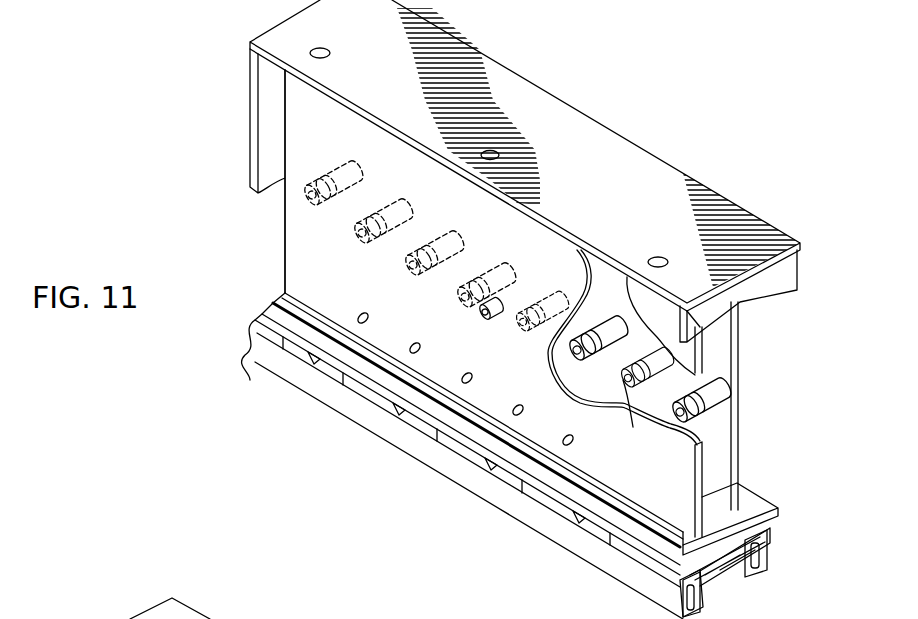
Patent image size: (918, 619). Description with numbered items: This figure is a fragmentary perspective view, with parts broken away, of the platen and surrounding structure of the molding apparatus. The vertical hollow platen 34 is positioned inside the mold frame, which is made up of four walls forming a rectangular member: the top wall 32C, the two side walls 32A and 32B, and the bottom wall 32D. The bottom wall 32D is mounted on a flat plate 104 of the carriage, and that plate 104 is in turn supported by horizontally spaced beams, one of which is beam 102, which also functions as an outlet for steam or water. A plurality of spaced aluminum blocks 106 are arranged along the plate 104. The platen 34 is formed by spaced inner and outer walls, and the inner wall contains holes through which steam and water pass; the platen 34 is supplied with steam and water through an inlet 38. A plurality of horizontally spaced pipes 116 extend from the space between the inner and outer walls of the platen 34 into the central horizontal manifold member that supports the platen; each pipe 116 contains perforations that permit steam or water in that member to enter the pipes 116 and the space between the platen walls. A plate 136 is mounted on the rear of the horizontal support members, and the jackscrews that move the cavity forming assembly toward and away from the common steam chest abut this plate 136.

The side wall 32A is at (265, 133).
The side wall 32B is at (782, 290).
The top wall 32C is at (598, 133).
The bottom wall 32D is at (752, 492).
The platen 34 is at (740, 412).
The inlet 38 is at (480, 318).
The beam 102 is at (767, 563).
The flat plate 104 is at (583, 533).
The aluminum blocks 106 is at (283, 345).
The pipes 116 is at (357, 226).
The plate 136 is at (298, 278).